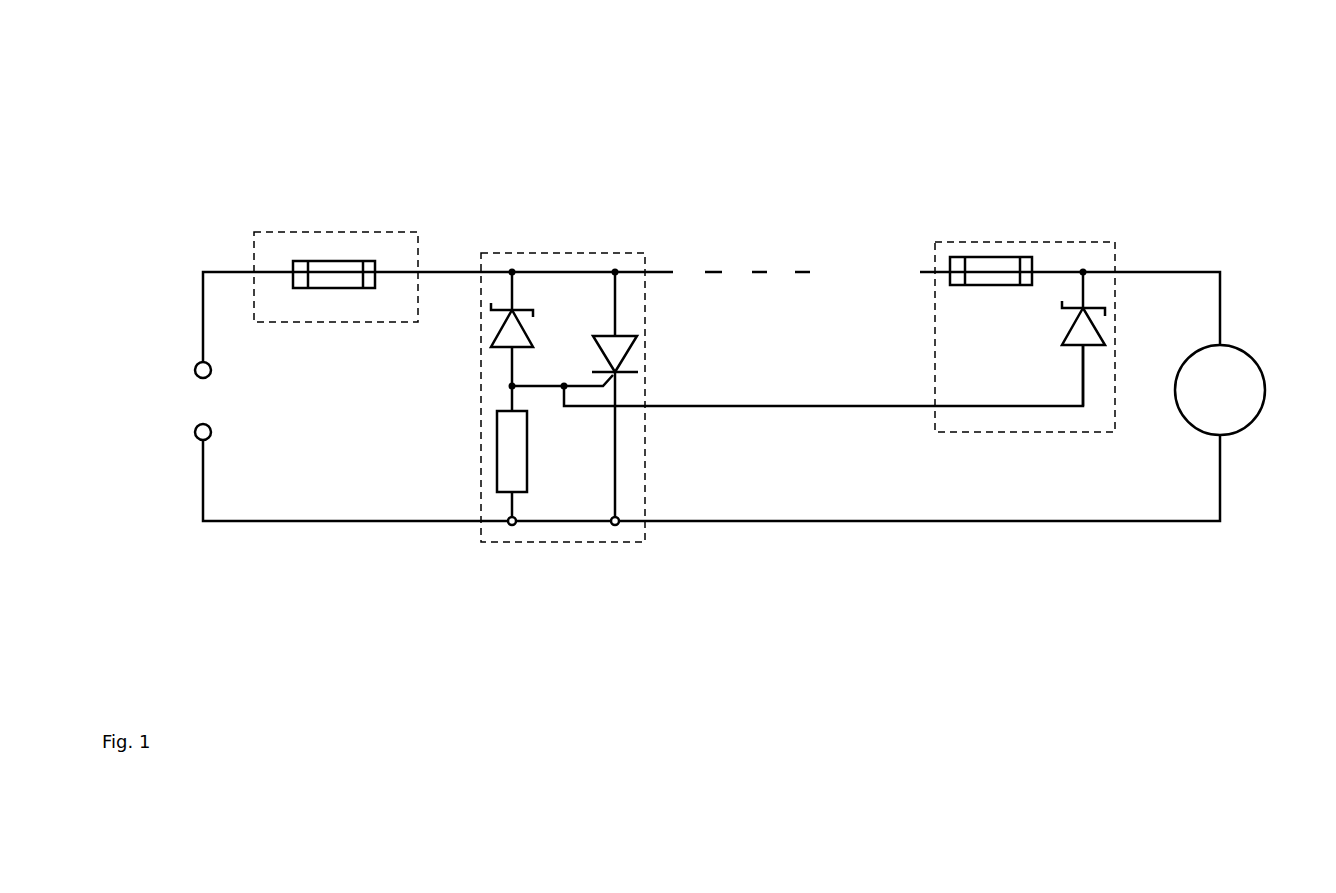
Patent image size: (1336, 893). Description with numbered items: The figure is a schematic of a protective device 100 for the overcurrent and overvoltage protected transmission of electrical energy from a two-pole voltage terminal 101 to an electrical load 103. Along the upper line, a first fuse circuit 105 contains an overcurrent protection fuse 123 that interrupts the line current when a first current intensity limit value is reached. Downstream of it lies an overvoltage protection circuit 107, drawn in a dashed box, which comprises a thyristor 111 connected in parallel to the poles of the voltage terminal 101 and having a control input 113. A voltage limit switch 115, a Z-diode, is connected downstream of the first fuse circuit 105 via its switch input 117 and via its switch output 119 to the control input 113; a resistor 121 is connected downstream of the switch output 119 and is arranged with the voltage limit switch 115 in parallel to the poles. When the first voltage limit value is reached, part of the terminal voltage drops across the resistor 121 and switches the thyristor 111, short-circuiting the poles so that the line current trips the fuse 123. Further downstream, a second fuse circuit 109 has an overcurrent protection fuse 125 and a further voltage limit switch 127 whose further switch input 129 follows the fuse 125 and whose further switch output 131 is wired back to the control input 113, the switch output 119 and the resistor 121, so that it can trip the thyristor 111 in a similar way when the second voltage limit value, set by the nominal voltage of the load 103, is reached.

The protective device 100 is at (374, 112).
The voltage terminal 101 is at (200, 400).
The electrical load 103 is at (1235, 370).
The first fuse circuit 105 is at (347, 230).
The overvoltage protection circuit 107 is at (598, 253).
The second fuse circuit 109 is at (1060, 240).
The thyristor 111 is at (612, 337).
The control input 113 is at (606, 381).
The voltage limit switch 115 is at (498, 333).
The switch input 117 is at (510, 295).
The switch output 119 is at (510, 365).
The resistor 121 is at (513, 480).
The overcurrent protection fuse 123 is at (320, 273).
The overcurrent protection fuse 125 is at (987, 265).
The further voltage limit switch 127 is at (1102, 322).
The further switch input 129 is at (1083, 271).
The further switch output 131 is at (1085, 383).